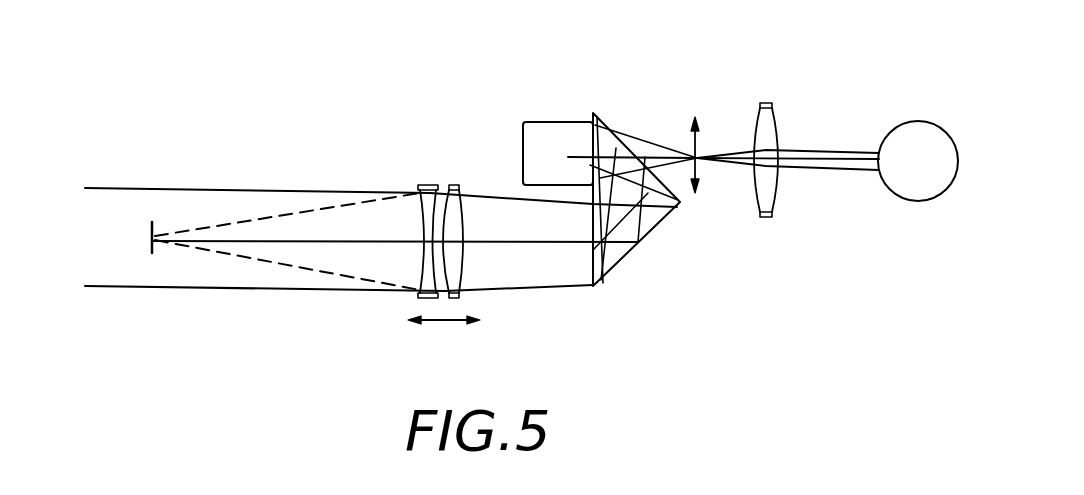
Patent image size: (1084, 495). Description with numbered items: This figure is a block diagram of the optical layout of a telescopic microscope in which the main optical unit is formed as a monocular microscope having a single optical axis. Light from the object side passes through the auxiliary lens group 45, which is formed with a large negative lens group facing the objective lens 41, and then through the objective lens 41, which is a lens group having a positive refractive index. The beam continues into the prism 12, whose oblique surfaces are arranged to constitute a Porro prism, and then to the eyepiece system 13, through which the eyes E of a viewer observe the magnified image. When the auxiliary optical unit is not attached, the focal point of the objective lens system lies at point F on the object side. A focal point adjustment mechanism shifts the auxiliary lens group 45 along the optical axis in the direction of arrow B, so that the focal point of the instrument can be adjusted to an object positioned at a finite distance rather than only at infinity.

The prism 12 is at (614, 133).
The eyepiece system 13 is at (768, 103).
The objective lens 41 is at (455, 185).
The auxiliary lens group 45 is at (430, 185).
The focal point F is at (150, 237).
The arrow indicating X-axial shifting direction B is at (444, 340).
The eyes of a viewer E is at (912, 184).